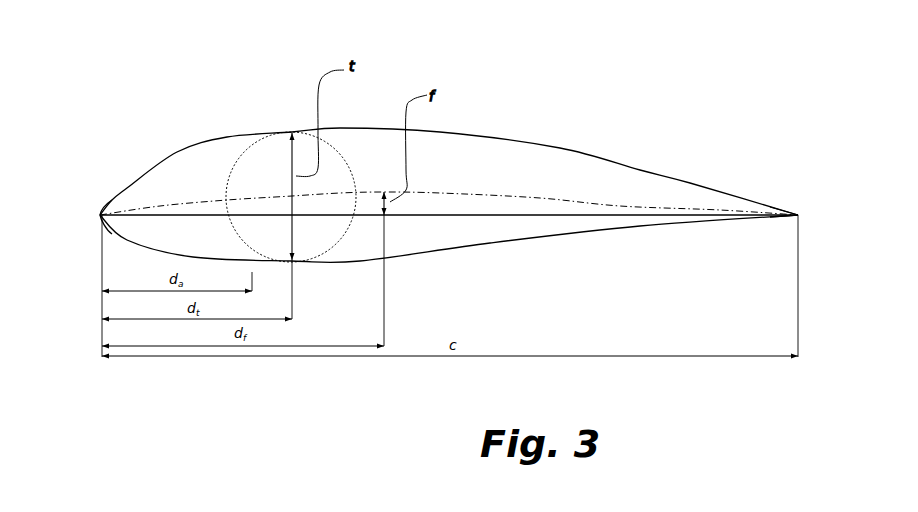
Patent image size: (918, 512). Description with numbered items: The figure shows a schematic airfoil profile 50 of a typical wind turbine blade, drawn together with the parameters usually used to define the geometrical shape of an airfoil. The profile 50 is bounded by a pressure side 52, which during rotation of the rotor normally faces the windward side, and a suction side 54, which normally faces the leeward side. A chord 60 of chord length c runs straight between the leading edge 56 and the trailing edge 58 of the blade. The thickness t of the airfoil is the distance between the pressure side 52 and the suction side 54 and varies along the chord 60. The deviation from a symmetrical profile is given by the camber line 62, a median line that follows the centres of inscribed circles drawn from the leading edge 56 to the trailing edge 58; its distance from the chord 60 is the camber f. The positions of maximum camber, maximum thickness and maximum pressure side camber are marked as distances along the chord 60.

The airfoil profile 50 is at (430, 62).
The pressure side 52 is at (585, 236).
The suction side 54 is at (535, 142).
The leading edge 56 is at (100, 213).
The trailing edge 58 is at (797, 214).
The chord 60 is at (620, 216).
The camber line 62 is at (440, 193).